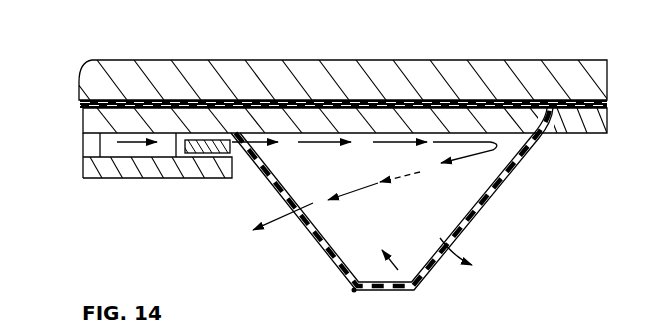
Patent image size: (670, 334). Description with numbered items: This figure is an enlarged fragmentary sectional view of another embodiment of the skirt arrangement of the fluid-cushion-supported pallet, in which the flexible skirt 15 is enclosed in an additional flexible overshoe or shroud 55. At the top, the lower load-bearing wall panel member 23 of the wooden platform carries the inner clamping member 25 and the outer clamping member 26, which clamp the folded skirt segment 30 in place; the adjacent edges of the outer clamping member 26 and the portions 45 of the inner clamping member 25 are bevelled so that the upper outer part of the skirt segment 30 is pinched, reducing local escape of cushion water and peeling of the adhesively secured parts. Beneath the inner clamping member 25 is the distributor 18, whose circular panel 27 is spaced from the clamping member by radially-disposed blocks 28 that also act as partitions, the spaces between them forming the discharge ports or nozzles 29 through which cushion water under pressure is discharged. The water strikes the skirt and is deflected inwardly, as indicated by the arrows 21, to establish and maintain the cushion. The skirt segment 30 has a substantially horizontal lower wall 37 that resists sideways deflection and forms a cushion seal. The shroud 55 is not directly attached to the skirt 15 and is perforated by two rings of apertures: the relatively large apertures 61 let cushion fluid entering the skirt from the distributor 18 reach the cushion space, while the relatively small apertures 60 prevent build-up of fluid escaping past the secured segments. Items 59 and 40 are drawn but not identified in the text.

The lower load-bearing wall panel member 23 is at (88, 72).
The portions of the clamping member 45 is at (503, 115).
The inner clamping member 25 is at (87, 121).
The outer clamping member 26 is at (580, 127).
The distributor 18 is at (86, 181).
The radially-disposed blocks 28 is at (111, 150).
The discharge ports or nozzles 29 is at (150, 152).
The circular panel 27 is at (173, 160).
The flow restrictor 59 is at (194, 157).
The arrows 21 is at (410, 176).
The flexible skirt 15 is at (364, 172).
The skirt segment 30 is at (414, 280).
The lower wall 37 is at (366, 272).
The flow arrow 40 is at (398, 270).
The shroud 55 is at (353, 291).
The apertures 61 is at (295, 218).
The apertures 60 is at (451, 240).